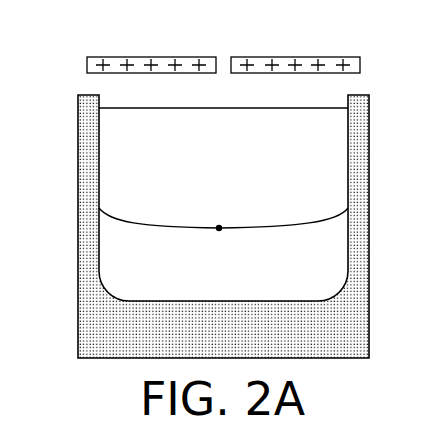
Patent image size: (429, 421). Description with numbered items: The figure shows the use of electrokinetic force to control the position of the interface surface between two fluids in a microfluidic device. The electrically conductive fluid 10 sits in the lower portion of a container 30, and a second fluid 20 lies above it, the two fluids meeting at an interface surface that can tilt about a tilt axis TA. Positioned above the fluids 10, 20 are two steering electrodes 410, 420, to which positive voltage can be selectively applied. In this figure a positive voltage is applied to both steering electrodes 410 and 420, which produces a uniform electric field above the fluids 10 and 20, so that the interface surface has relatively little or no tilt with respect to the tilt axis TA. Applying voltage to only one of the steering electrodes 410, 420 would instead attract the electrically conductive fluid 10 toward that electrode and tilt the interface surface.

The steering electrode 410 is at (151, 45).
The steering electrode 420 is at (295, 45).
The container 30 is at (350, 330).
The fluid 20 is at (223, 141).
The electrically conductive fluid 10 is at (223, 247).
The tilt axis TA is at (218, 217).